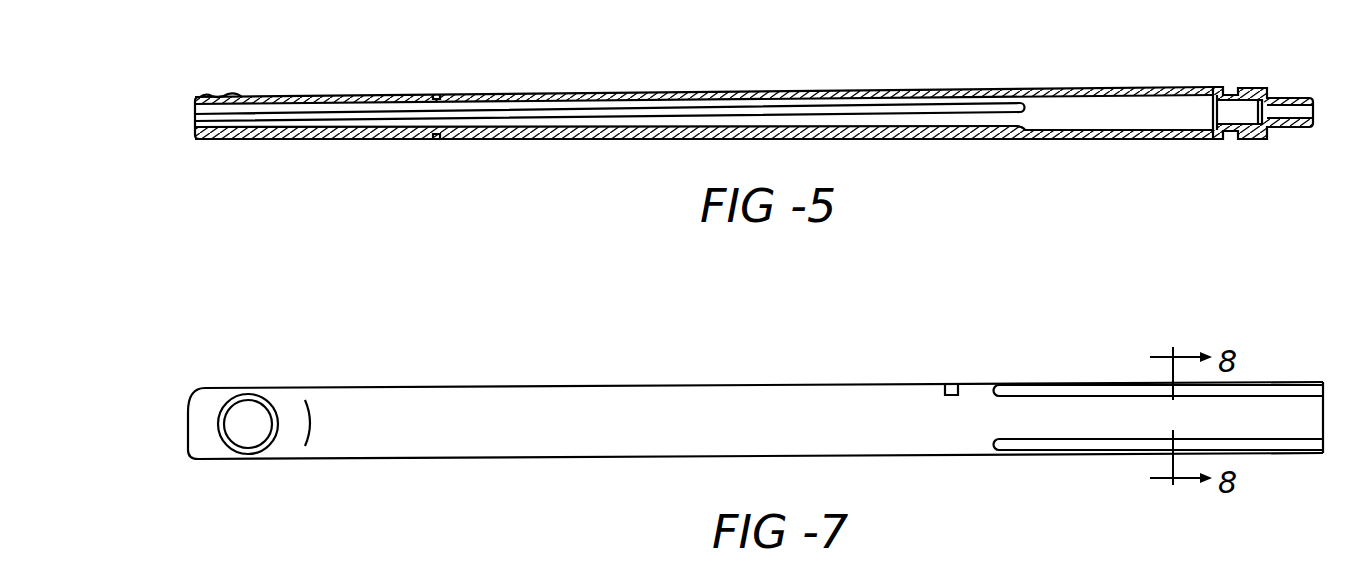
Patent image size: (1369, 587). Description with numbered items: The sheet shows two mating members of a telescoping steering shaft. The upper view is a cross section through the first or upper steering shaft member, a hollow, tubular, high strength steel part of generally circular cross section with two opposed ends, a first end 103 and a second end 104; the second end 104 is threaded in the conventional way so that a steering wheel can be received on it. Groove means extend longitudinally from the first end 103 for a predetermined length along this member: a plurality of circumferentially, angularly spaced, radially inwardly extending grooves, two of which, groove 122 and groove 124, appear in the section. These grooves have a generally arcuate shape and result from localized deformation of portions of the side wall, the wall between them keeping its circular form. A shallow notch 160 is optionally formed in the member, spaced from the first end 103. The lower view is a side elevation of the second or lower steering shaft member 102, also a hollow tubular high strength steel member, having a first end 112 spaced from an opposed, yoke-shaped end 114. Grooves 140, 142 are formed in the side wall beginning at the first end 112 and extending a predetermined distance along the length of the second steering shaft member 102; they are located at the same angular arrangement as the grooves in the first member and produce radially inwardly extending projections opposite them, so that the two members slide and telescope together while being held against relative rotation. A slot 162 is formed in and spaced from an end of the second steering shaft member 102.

In FIG. 5, the first end 103 is at (193, 101).
In FIG. 5, the shallow notch 160 is at (224, 97).
In FIG. 5, the groove 124 is at (490, 112).
In FIG. 5, the groove 122 is at (1020, 136).
In FIG. 5, the second end 104 is at (1280, 98).
In FIG. 7, the second steering shaft member 102 is at (465, 378).
In FIG. 7, the yoke-shaped end 114 is at (264, 393).
In FIG. 7, the slot 162 is at (952, 384).
In FIG. 7, the groove 140 is at (1033, 392).
In FIG. 7, the groove 142 is at (1080, 443).
In FIG. 7, the first end 112 is at (1325, 417).